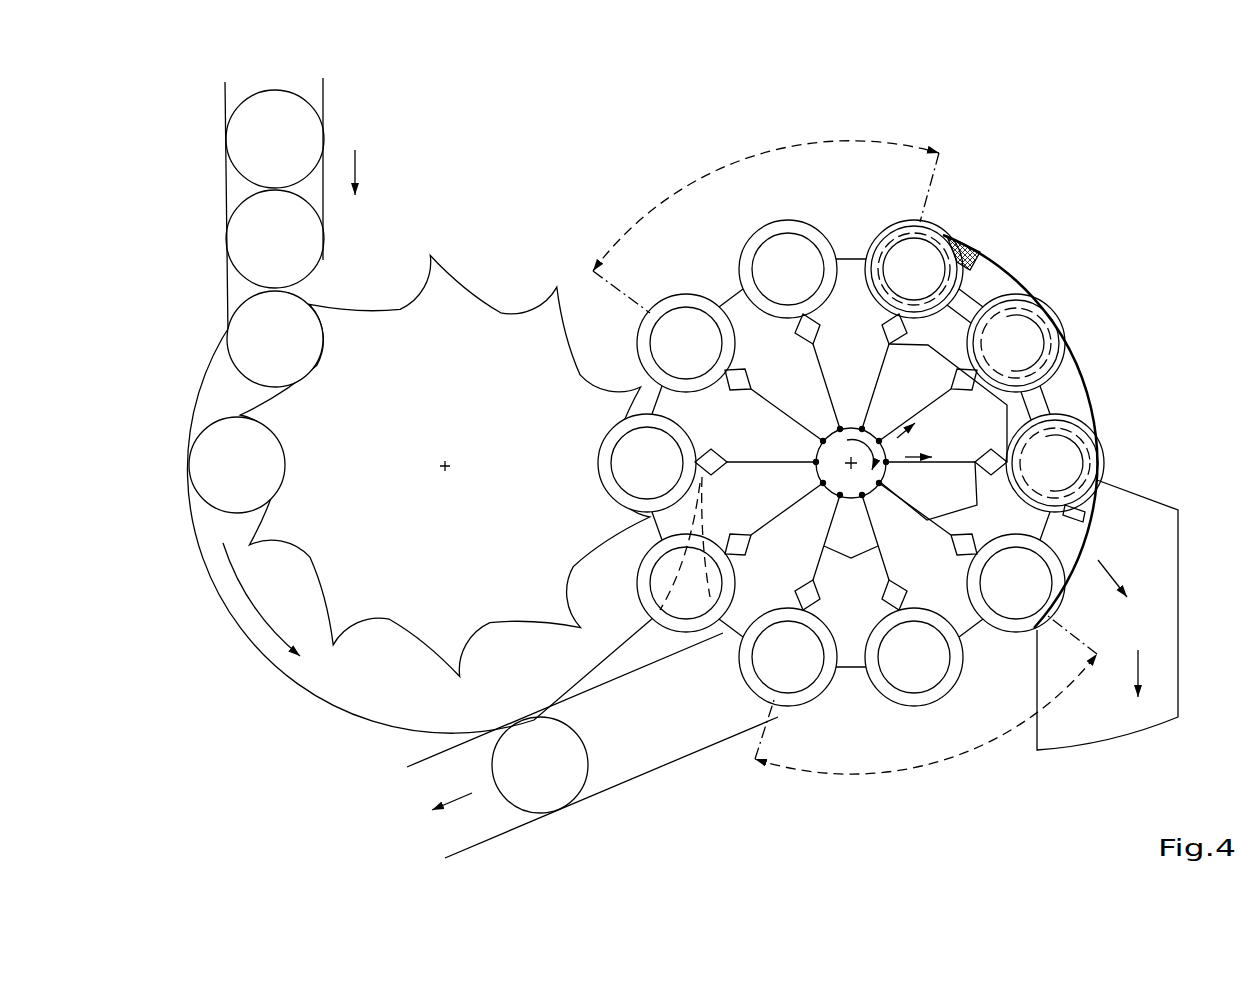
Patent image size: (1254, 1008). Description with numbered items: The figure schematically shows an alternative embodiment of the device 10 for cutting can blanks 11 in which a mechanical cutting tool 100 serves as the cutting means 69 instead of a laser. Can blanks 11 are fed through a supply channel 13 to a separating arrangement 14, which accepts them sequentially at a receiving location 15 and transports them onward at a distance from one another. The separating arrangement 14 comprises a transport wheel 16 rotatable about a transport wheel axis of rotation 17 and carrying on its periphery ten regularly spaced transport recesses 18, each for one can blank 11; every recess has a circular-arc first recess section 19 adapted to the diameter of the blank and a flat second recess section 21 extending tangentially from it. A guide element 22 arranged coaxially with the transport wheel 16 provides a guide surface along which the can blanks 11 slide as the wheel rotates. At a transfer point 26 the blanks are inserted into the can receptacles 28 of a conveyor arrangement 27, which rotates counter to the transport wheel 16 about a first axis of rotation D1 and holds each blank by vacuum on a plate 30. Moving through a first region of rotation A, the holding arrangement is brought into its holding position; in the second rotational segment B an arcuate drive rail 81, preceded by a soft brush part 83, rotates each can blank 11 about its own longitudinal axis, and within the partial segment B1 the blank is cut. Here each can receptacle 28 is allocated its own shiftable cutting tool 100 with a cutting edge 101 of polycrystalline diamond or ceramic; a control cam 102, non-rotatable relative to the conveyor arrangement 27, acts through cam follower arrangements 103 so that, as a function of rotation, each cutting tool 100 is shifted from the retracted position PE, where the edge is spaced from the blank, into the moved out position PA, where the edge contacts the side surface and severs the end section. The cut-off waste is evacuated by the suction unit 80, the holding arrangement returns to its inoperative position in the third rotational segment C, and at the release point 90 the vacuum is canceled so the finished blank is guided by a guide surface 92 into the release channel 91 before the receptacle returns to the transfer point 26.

The device 10 is at (1093, 182).
The can blank 11 is at (227, 210).
The supply channel 13 is at (228, 100).
The separating arrangement 14 is at (457, 205).
The receiving location 15 is at (212, 302).
The transport wheel 16 is at (482, 333).
The transport wheel axis of rotation 17 is at (447, 463).
The transport recesses 18 is at (407, 302).
The first recess section 19 is at (318, 324).
The second recess section 21 is at (256, 407).
The guide element 22 is at (220, 600).
The transfer point 26 is at (603, 495).
The conveyor arrangement 27 is at (1136, 342).
The can receptacles 28 is at (627, 455).
The plate 30 is at (676, 314).
The cutting means 69 is at (737, 441).
The suction unit 80 is at (1150, 575).
The drive rail 81 is at (1010, 268).
The brush part 83 is at (968, 244).
The release point 90 is at (757, 707).
The release channel 91 is at (640, 748).
The guide surface 92 is at (720, 640).
The cutting tool 100 is at (900, 348).
The cutting edge 101 is at (737, 380).
The control cam 102 is at (851, 500).
The cam follower arrangements 103 is at (780, 410).
The first region of rotation A is at (735, 160).
The second rotational segment B is at (1120, 372).
The third rotational segment C is at (930, 772).
The retracted position PE is at (868, 355).
The moved out position PA is at (978, 449).
The first axis of rotation D1 is at (838, 434).
The partial segment B1 is at (885, 438).